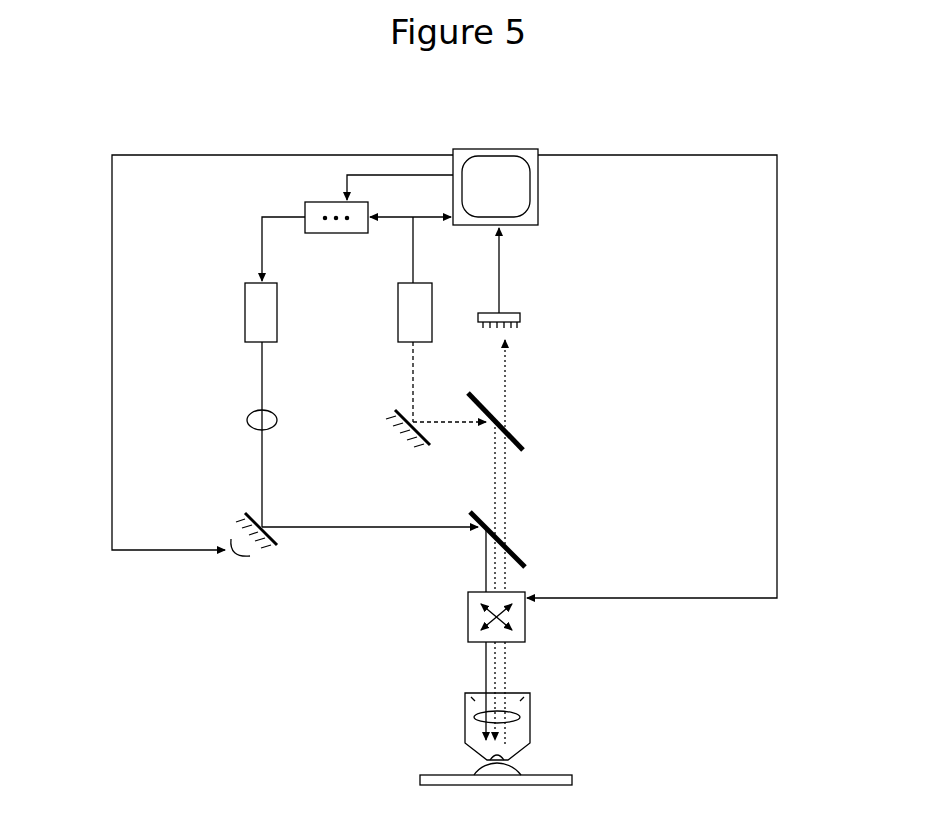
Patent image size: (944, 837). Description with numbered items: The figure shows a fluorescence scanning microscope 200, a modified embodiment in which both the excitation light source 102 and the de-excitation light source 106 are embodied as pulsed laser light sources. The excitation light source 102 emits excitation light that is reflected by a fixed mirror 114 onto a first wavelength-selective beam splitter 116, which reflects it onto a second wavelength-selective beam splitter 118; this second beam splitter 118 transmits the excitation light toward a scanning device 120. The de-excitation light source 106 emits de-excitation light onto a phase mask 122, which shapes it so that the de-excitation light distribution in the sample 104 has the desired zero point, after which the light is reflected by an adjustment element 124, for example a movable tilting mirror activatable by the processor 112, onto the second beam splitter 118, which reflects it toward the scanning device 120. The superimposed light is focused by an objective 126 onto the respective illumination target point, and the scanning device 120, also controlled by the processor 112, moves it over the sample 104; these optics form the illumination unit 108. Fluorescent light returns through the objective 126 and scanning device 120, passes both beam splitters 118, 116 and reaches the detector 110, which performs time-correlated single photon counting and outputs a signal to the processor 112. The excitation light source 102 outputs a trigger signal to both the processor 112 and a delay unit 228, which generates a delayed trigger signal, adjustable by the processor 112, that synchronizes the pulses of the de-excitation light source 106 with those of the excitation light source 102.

The fluorescence scanning microscope 200 is at (689, 122).
The illumination unit 108 is at (372, 604).
The processor 112 is at (540, 212).
The delay unit 228 is at (339, 200).
The de-excitation light source 106 is at (245, 311).
The excitation light source 102 is at (398, 312).
The detector 110 is at (525, 326).
The phase mask 122 is at (248, 428).
The adjustment element 124 is at (266, 521).
The fixed mirror 114 is at (437, 446).
The first wavelength-selective beam splitter 116 is at (520, 441).
The second wavelength-selective beam splitter 118 is at (524, 556).
The scanning device 120 is at (528, 627).
The objective 126 is at (535, 736).
The sample 104 is at (522, 776).